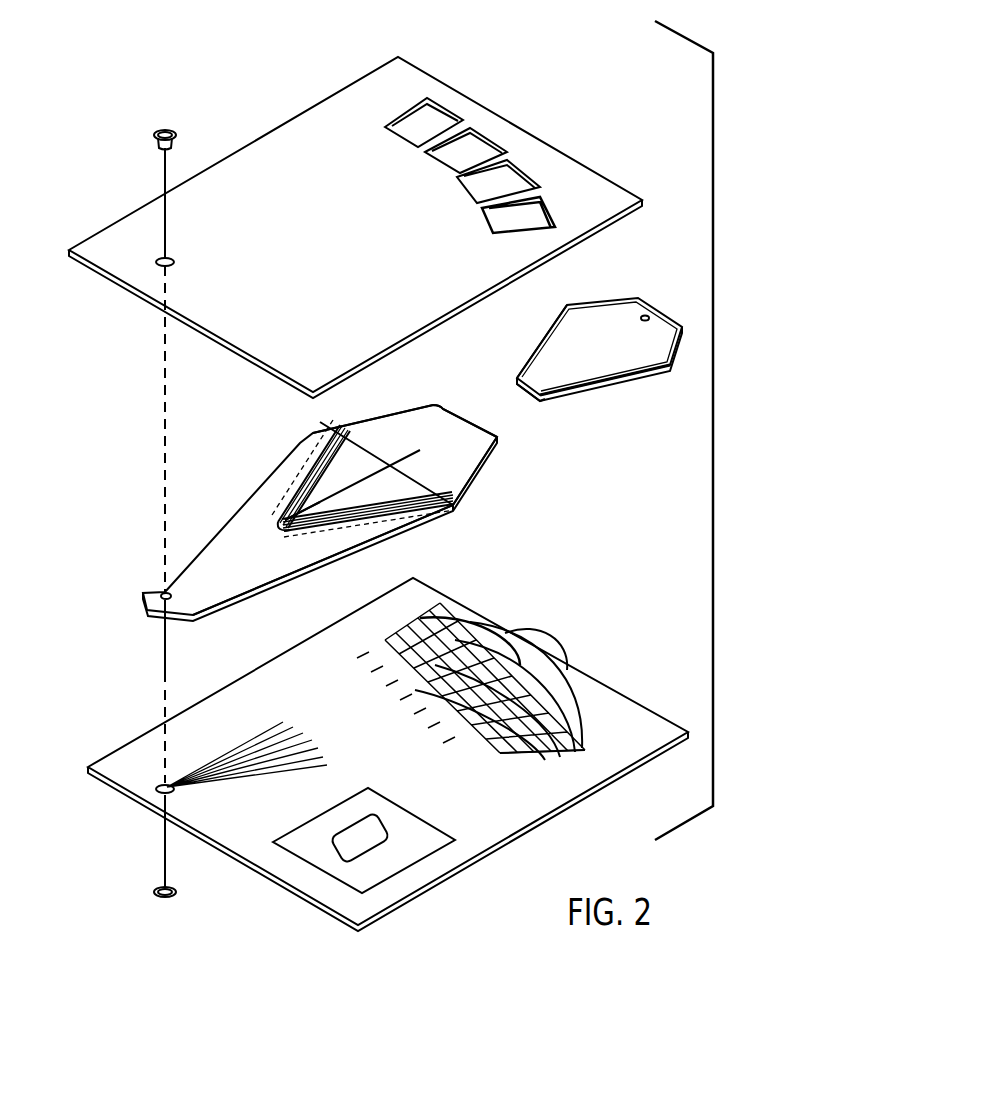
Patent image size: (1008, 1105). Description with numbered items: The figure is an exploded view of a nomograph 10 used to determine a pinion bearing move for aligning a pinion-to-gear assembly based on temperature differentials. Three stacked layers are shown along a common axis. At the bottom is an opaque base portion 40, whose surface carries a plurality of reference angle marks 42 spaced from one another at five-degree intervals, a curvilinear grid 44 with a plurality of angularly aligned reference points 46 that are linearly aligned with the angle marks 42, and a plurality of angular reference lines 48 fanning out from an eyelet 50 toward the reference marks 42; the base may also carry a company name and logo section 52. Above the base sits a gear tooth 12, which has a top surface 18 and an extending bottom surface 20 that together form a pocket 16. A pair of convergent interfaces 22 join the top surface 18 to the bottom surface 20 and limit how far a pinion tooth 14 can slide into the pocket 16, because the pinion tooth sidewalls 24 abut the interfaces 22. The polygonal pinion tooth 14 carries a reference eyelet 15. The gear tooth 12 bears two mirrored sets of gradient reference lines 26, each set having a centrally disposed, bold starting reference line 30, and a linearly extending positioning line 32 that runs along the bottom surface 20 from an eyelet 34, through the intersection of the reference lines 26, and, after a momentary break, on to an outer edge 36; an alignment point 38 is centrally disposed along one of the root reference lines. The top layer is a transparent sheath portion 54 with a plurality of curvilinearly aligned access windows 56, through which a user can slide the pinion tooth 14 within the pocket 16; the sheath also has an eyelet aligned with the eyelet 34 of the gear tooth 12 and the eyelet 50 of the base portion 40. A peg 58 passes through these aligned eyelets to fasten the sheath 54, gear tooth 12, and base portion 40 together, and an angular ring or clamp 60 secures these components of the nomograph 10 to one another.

The nomograph 10 is at (98, 106).
The gear tooth 12 is at (222, 474).
The pinion tooth 14 is at (652, 278).
The reference eyelet 15 is at (649, 318).
The pocket 16 is at (395, 436).
The top surface 18 is at (360, 465).
The extending bottom surface 20 is at (417, 435).
The convergent interfaces 22 is at (286, 480).
The pinion tooth sidewalls 24 is at (537, 344).
The gradient reference lines 26 is at (320, 436).
The starting reference line 30 is at (312, 456).
The positioning line 32 is at (474, 428).
The eyelet 34 is at (161, 594).
The outer edge 36 is at (466, 422).
The alignment point 38 is at (297, 543).
The opaque base portion 40 is at (469, 805).
The reference angle marks 42 is at (395, 706).
The curvilinear grid 44 is at (510, 756).
The reference points 46 is at (506, 633).
The angular reference lines 48 is at (225, 788).
The eyelet 50 is at (158, 794).
The company name and logo section 52 is at (315, 868).
The transparent sheath portion 54 is at (337, 190).
The access windows 56 is at (430, 100).
The peg 58 is at (167, 130).
The angular ring or clamp 60 is at (176, 897).